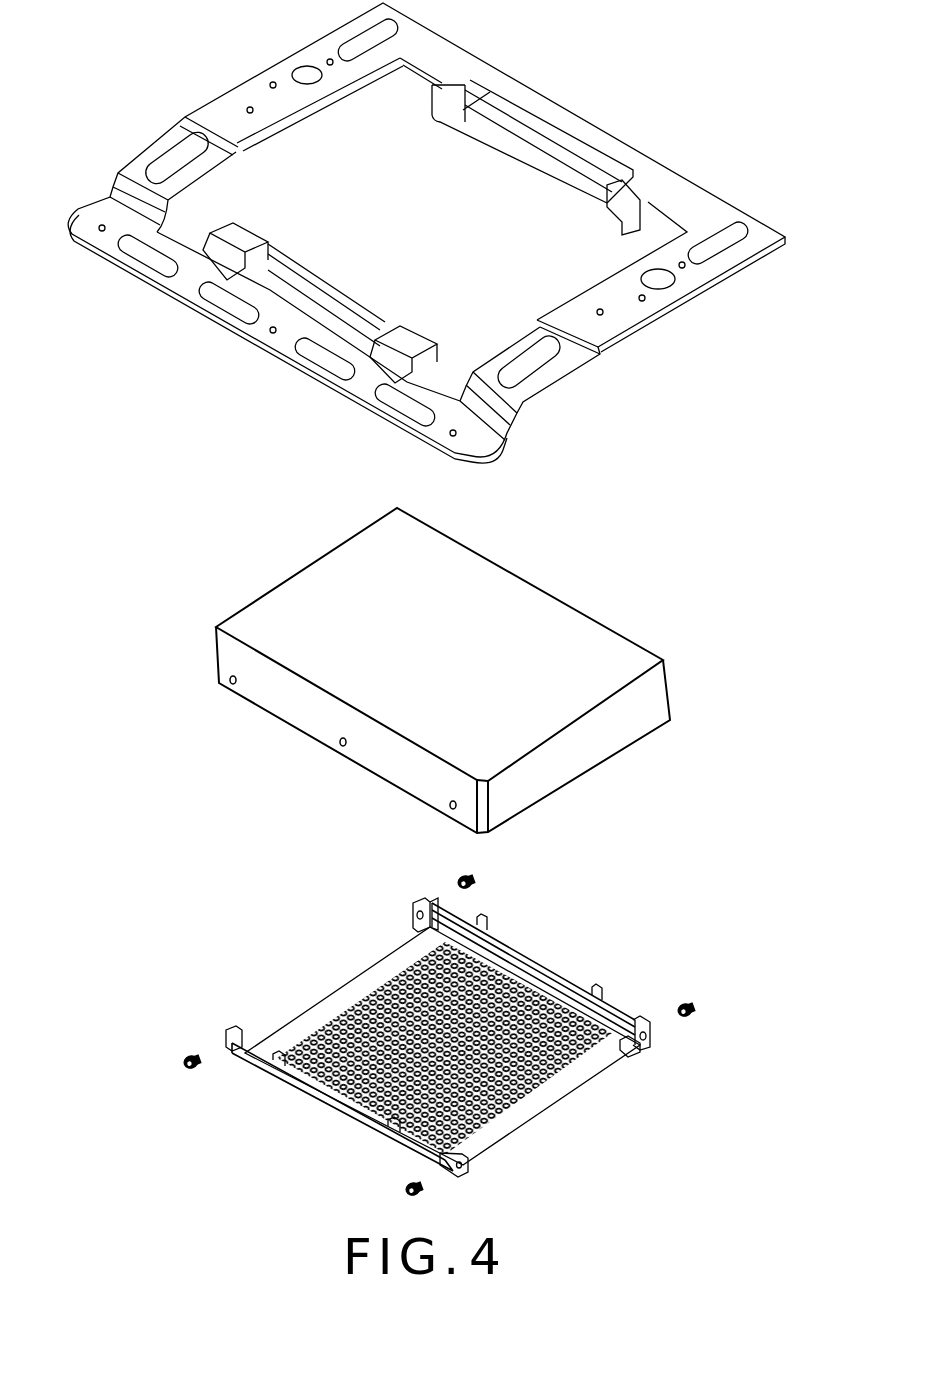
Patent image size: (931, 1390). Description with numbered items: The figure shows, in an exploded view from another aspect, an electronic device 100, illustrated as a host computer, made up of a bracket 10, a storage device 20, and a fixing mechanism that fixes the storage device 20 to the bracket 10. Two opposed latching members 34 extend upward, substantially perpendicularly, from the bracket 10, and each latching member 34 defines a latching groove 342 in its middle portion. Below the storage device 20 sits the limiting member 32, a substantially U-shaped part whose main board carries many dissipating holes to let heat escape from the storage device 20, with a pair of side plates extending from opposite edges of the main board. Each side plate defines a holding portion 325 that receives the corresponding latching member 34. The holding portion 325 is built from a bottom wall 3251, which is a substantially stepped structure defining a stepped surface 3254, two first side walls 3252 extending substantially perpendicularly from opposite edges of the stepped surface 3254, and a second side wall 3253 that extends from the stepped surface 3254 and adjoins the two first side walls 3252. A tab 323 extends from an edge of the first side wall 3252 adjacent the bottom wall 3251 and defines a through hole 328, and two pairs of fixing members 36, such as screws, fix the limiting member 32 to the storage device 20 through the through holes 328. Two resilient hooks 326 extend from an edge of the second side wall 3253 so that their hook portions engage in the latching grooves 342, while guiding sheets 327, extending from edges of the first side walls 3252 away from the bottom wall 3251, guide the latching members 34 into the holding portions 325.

The electronic device 100 is at (153, 72).
The bracket 10 is at (470, 78).
The latching groove 342 is at (557, 155).
The latching member 34 is at (627, 220).
The storage device 20 is at (545, 645).
The limiting member 32 is at (258, 993).
The fixing member 36 is at (190, 1055).
The first side wall 3252 is at (433, 903).
The tab 323 is at (413, 912).
The through hole 328 is at (415, 918).
The resilient hook 326 is at (480, 918).
The bottom wall 3251 is at (493, 962).
The holding portion 325 is at (545, 983).
The second side wall 3253 is at (610, 1008).
The guiding sheet 327 is at (637, 1022).
The stepped surface 3254 is at (627, 1047).